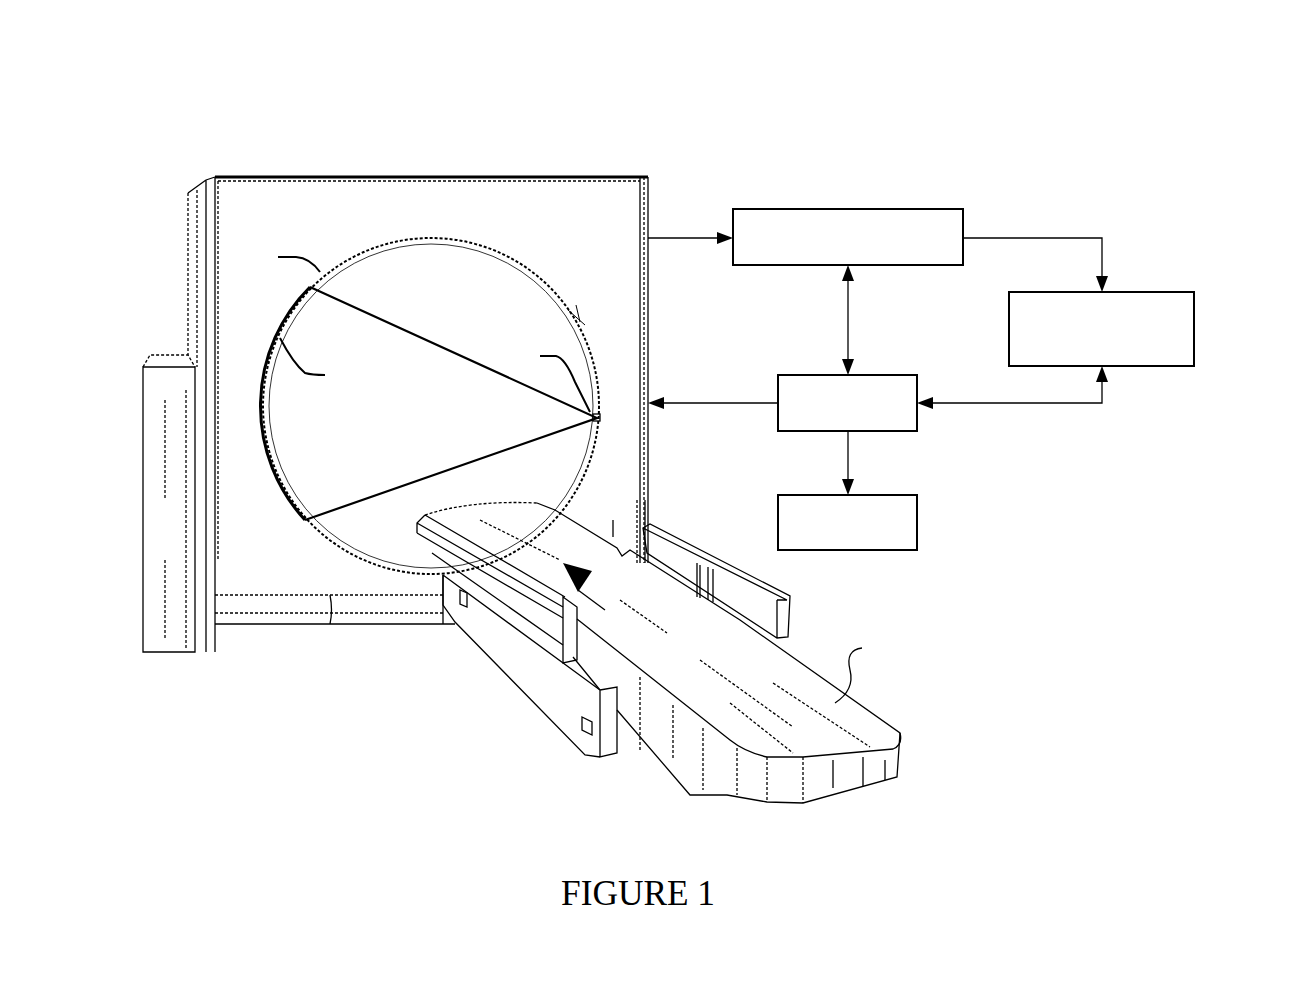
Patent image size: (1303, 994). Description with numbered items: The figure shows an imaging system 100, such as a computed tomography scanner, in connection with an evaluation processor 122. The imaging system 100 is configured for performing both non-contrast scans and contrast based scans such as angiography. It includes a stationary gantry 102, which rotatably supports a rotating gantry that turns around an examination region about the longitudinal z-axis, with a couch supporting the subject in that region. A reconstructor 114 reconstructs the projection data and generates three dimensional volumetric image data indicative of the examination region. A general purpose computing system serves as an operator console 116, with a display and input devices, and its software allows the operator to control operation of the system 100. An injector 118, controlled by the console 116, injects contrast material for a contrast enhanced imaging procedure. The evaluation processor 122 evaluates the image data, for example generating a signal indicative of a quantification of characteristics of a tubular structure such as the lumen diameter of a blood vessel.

The imaging system 100 is at (238, 84).
The stationary gantry 102 is at (308, 177).
The reconstructor 114 is at (848, 209).
The operator console 116 is at (878, 431).
The injector 118 is at (917, 520).
The evaluation processor 122 is at (1138, 292).